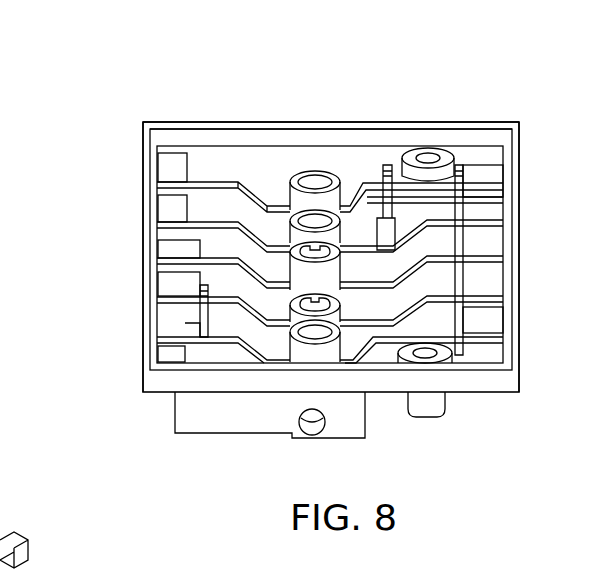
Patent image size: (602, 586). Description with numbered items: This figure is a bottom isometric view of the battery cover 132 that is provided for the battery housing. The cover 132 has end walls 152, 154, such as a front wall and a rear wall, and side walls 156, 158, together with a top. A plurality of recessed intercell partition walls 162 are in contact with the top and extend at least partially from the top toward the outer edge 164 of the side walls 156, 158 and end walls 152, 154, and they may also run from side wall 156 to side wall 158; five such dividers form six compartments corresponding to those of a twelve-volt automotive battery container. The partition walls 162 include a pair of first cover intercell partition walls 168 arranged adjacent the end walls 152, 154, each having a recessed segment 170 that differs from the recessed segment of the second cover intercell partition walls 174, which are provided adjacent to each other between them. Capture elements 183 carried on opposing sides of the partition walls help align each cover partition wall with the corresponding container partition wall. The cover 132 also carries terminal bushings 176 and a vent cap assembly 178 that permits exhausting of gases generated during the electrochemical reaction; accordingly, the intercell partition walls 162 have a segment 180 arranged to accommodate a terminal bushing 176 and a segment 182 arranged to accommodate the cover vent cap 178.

The cover 132 is at (108, 94).
The end wall 152 is at (354, 121).
The end wall 154 is at (433, 377).
The side wall 156 is at (524, 259).
The side wall 158 is at (136, 211).
The intercell partition wall 162 is at (438, 270).
The outer edge 164 is at (172, 123).
The first cover intercell partition wall 168 is at (228, 197).
The recessed segment 170 is at (247, 276).
The second cover intercell partition wall 174 is at (440, 238).
The terminal bushing 176 is at (452, 150).
The vent cap assembly 178 is at (340, 300).
The segment 180 is at (485, 190).
The segment 182 is at (312, 290).
The capture element 183 is at (203, 297).